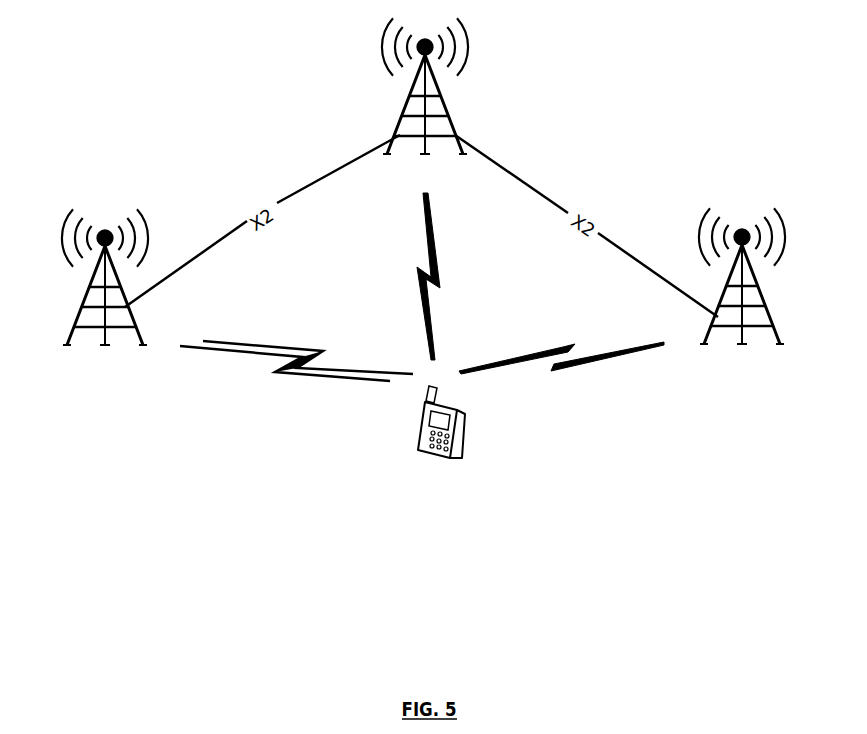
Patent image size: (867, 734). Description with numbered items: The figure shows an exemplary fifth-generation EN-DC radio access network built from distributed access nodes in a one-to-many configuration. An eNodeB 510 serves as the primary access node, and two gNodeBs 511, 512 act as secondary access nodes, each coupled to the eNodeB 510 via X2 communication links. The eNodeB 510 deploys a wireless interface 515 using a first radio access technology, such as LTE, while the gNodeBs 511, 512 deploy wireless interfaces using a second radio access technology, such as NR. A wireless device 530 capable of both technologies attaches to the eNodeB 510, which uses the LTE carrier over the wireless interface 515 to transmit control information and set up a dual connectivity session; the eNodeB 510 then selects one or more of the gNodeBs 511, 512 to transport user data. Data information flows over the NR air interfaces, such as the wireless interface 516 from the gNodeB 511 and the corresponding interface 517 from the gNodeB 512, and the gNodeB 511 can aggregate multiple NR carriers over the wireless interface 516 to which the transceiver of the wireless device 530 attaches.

The eNodeB 510 is at (405, 118).
The gNodeB 511 is at (78, 325).
The gNodeB 512 is at (768, 318).
The wireless interface 515 is at (418, 270).
The 5G wireless interface 516 is at (297, 400).
The NR link between gNB 512 and UE 517 is at (567, 368).
The wireless device 530 is at (432, 454).